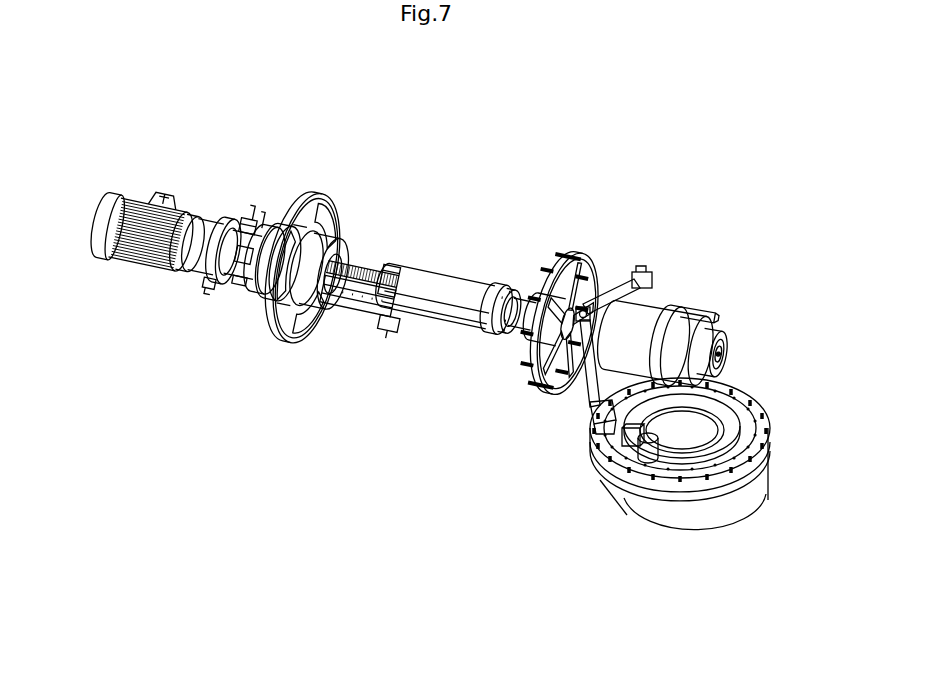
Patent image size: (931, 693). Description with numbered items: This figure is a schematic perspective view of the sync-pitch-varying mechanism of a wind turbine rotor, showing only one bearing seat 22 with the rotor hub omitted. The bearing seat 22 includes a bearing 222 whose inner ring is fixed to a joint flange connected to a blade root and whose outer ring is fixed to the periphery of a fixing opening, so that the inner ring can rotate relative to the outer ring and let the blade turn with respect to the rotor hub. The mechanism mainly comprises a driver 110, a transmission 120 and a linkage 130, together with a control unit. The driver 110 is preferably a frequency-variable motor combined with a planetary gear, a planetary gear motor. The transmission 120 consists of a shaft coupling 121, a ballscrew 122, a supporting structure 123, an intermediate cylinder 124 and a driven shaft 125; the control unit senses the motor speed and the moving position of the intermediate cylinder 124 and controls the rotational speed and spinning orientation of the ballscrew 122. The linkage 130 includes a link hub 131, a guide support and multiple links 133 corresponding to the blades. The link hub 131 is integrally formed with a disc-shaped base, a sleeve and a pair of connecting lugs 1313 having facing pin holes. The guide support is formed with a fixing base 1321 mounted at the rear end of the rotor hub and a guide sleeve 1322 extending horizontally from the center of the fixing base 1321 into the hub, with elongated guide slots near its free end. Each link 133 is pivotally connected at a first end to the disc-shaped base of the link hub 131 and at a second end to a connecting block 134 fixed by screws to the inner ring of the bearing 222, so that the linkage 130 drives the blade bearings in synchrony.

The driver 110 is at (128, 178).
The transmission 120 is at (392, 157).
The shaft coupling 121 is at (228, 218).
The ballscrew 122 is at (372, 262).
The supporting structure 123 is at (272, 312).
The intermediate cylinder 124 is at (430, 278).
The linkage 130 is at (693, 185).
The fixing base 1321 is at (577, 252).
The link hub 131 is at (642, 273).
The connecting lugs 1313 is at (675, 312).
The guide sleeve 1322 is at (715, 330).
The driven shaft 125 is at (717, 353).
The link 133 is at (590, 430).
The connecting block 134 is at (663, 450).
The bearing seat 22 is at (712, 500).
The bearing 222 is at (758, 402).